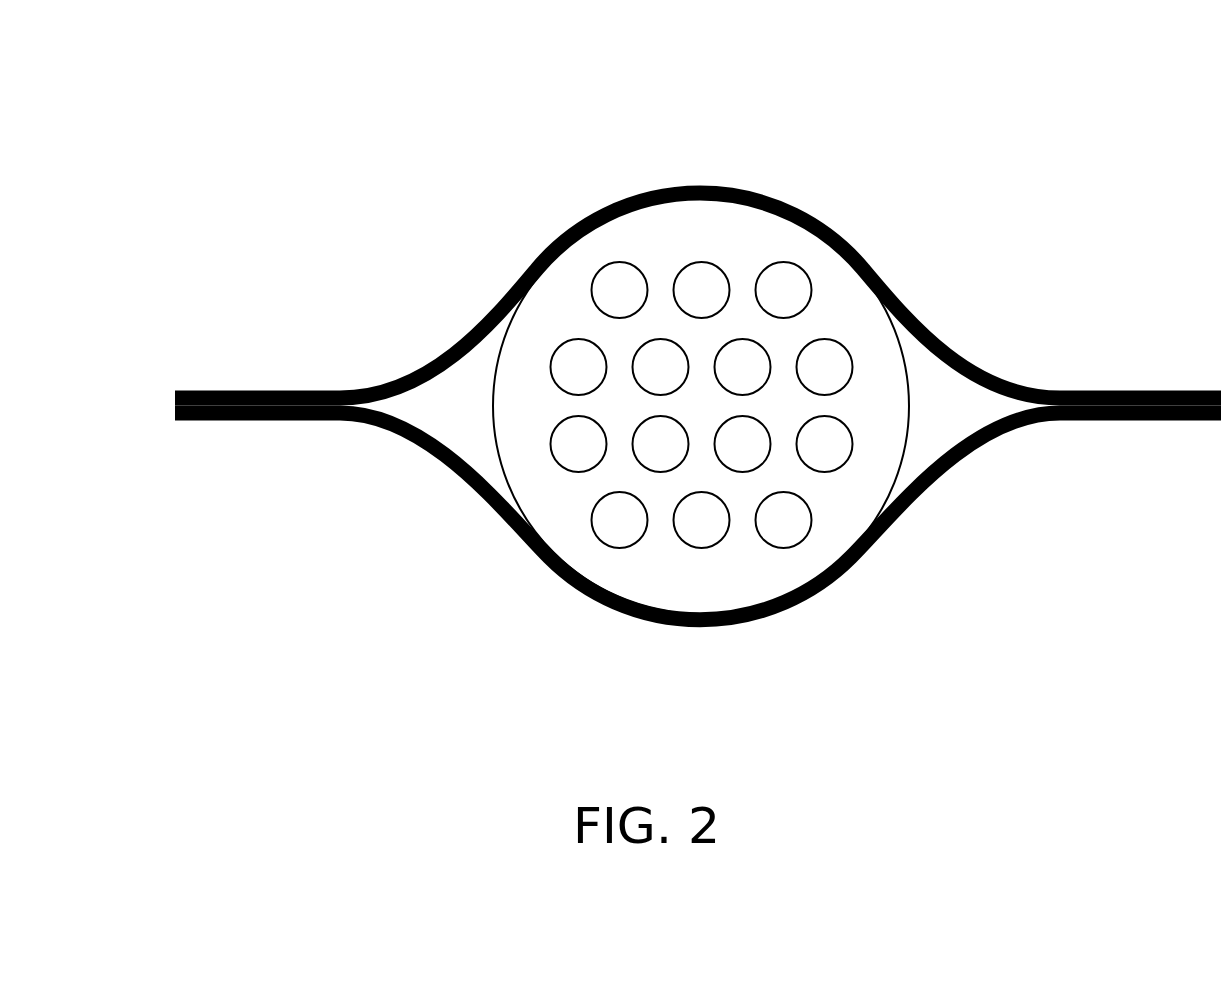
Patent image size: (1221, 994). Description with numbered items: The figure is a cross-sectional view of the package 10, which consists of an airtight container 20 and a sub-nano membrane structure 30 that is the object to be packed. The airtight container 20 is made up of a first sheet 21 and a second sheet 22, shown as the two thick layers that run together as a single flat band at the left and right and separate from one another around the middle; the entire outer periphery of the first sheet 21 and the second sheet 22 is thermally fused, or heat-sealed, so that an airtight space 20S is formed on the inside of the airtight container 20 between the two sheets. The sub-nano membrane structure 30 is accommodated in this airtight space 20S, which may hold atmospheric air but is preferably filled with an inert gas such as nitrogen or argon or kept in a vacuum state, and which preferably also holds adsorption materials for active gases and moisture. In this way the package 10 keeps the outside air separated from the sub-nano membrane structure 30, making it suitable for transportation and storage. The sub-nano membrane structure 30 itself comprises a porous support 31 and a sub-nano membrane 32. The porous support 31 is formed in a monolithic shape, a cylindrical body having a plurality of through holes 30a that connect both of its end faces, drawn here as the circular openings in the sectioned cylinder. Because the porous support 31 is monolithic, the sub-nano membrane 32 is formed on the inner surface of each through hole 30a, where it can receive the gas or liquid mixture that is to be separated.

The package 10 is at (390, 237).
The airtight container 20 is at (1108, 375).
The first sheet 21 is at (975, 368).
The second sheet 22 is at (977, 440).
The airtight space 20S is at (933, 427).
The sub-nano membrane structure 30 is at (609, 354).
The porous support 31 is at (650, 243).
The sub-nano membrane 32 is at (730, 290).
The through hole 30a is at (782, 291).